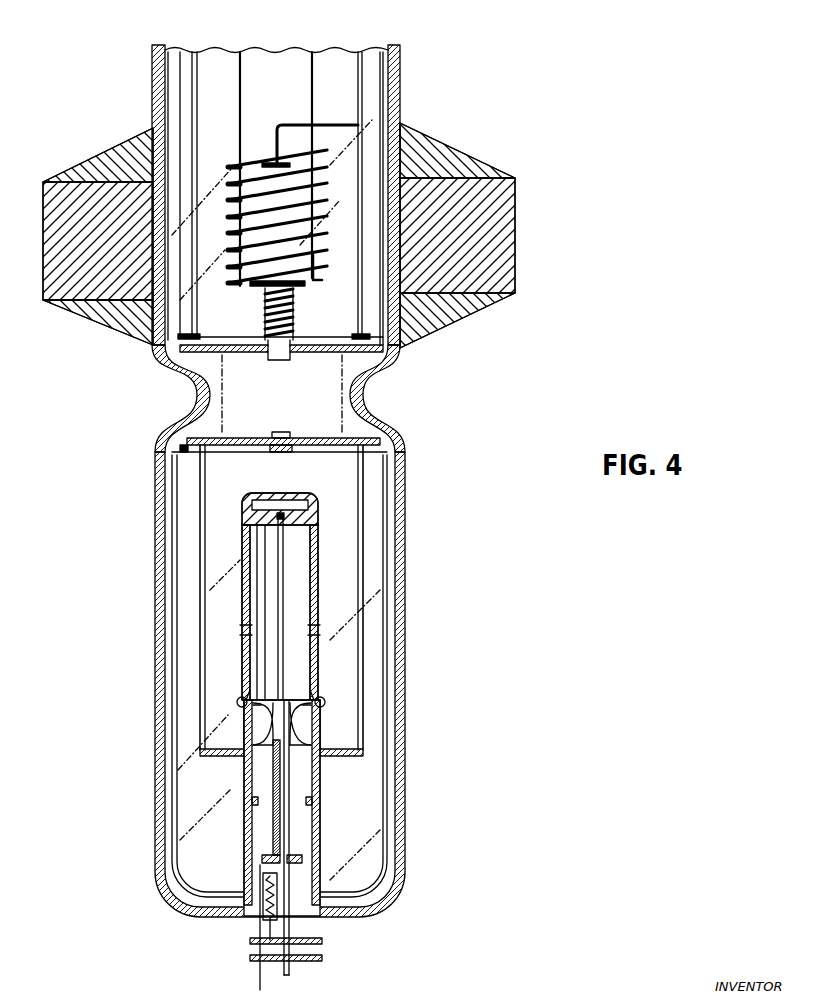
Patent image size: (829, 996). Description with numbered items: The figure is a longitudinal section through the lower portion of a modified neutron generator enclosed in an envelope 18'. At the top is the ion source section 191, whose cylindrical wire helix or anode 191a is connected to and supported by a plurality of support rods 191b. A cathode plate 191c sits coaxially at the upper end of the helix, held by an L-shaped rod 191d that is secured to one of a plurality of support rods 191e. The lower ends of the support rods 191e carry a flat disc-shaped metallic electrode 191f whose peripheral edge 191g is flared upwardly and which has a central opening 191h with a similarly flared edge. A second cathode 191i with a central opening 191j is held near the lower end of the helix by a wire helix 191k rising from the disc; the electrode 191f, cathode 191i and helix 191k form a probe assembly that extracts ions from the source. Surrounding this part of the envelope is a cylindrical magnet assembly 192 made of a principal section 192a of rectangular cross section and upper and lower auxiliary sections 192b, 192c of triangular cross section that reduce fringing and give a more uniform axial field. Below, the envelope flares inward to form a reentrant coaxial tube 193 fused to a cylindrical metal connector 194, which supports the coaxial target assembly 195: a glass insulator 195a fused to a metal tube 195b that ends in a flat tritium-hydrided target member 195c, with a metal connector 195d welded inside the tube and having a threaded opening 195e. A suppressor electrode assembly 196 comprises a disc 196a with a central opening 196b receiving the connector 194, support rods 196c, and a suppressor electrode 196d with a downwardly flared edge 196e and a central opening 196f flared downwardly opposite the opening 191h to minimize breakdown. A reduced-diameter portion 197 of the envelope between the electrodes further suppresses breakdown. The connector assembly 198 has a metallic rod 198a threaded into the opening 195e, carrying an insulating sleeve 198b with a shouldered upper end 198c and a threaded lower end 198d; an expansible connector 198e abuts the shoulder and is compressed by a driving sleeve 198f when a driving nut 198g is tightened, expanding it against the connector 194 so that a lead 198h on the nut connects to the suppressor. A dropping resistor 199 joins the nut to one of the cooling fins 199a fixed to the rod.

The envelope 18' is at (292, 195).
The ion source section 191 is at (218, 223).
The wire helix anode 191a is at (316, 272).
The support rods 191b is at (312, 105).
The cathode plate 191c is at (274, 162).
The L-shaped rod 191d is at (333, 124).
The support rods 191e is at (352, 52).
The disc-shaped metallic electrode 191f is at (229, 353).
The peripheral edge 191g is at (195, 335).
The central opening 191h is at (283, 355).
The second cathode 191i is at (262, 285).
The central opening 191j is at (265, 296).
The wire helix 191k is at (294, 315).
The cylindrical magnet assembly 192 is at (463, 327).
The principal magnet section 192a is at (515, 235).
The upper auxiliary magnet section 192b is at (453, 150).
The lower auxiliary magnet section 192c is at (430, 340).
The reentrant coaxial tube 193 is at (178, 856).
The cylindrical metal connector 194 is at (322, 762).
The coaxial target assembly 195 is at (325, 624).
The cylindrical glass insulator 195a is at (243, 660).
The metal tube 195b is at (243, 572).
The target member 195c is at (288, 494).
The metal connector 195d is at (302, 513).
The threaded opening 195e is at (250, 527).
The suppressor electrode assembly 196 is at (195, 761).
The disc 196a is at (221, 756).
The central opening 196b is at (247, 735).
The support rods 196c is at (360, 476).
The suppressor electrode 196d is at (253, 437).
The peripheral edge 196e is at (187, 449).
The central opening 196f is at (286, 438).
The reduced-diameter envelope portion 197 is at (366, 390).
The connector assembly 198 is at (311, 920).
The metallic rod 198a is at (289, 972).
The insulating sleeve 198b is at (302, 745).
The shouldered upper end 198c is at (313, 700).
The threaded lower end 198d is at (290, 866).
The expansible connector 198e is at (303, 725).
The driving sleeve 198f is at (292, 775).
The driving nut 198g is at (302, 857).
The lead 198h is at (260, 970).
The dropping resistor 199 is at (265, 920).
The cooling fins 199a is at (322, 958).